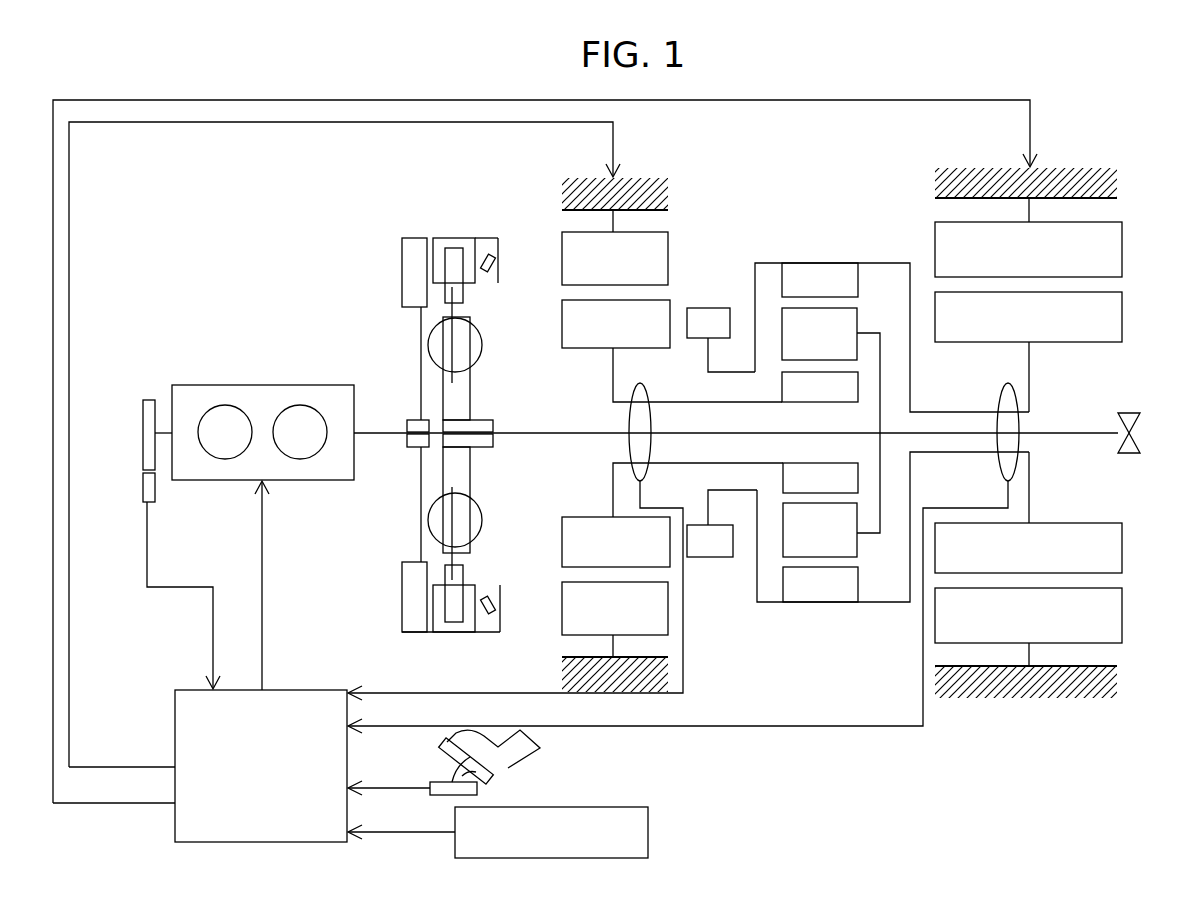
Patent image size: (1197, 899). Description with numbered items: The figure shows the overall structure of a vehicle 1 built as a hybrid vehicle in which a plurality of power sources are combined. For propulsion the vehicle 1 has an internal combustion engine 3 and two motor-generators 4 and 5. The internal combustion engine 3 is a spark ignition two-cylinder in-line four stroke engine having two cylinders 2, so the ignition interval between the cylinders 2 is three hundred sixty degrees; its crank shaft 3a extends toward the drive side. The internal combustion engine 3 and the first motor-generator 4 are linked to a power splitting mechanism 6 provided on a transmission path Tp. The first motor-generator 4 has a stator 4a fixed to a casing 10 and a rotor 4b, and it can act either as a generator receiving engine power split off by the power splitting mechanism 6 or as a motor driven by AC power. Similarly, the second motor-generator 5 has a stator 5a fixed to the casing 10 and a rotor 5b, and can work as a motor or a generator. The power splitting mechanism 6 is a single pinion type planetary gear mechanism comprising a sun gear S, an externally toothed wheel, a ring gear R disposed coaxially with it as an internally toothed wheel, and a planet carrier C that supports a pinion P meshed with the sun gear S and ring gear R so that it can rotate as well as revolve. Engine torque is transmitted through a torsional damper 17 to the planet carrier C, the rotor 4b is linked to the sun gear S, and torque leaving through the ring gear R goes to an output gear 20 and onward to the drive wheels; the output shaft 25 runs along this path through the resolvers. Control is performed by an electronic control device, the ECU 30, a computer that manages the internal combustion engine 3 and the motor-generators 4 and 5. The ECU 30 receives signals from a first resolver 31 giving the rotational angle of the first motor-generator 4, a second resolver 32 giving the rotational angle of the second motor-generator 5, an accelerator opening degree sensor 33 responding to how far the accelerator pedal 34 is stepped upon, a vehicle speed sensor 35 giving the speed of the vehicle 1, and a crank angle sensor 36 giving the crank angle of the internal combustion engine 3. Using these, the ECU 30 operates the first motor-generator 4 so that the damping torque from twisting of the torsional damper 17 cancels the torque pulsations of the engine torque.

The vehicle 1 is at (645, 143).
The cylinders 2 is at (212, 414).
The internal combustion engine 3 is at (252, 382).
The crank shaft 3a is at (372, 432).
The first motor-generator 4 is at (837, 429).
The stator 4a is at (562, 268).
The rotor 4b is at (562, 327).
The second motor-generator 5 is at (1031, 407).
The stator 5a is at (1122, 257).
The rotor 5b is at (1122, 320).
The power splitting mechanism 6 is at (883, 391).
The casing 10 is at (668, 210).
The torsional damper 17 is at (452, 248).
The output gear 20 is at (708, 308).
The output shaft 25 is at (515, 432).
The electronic control device 30 is at (175, 714).
The first resolver 31 is at (626, 420).
The second resolver 32 is at (1020, 420).
The accelerator opening degree sensor 33 is at (458, 762).
The accelerator pedal 34 is at (442, 752).
The vehicle speed sensor 35 is at (648, 832).
The crank angle sensor 36 is at (143, 488).
The ring gear R is at (858, 280).
The pinion P is at (857, 320).
The sun gear S is at (782, 388).
The planet carrier C is at (880, 414).
The transmission path Tp is at (572, 462).